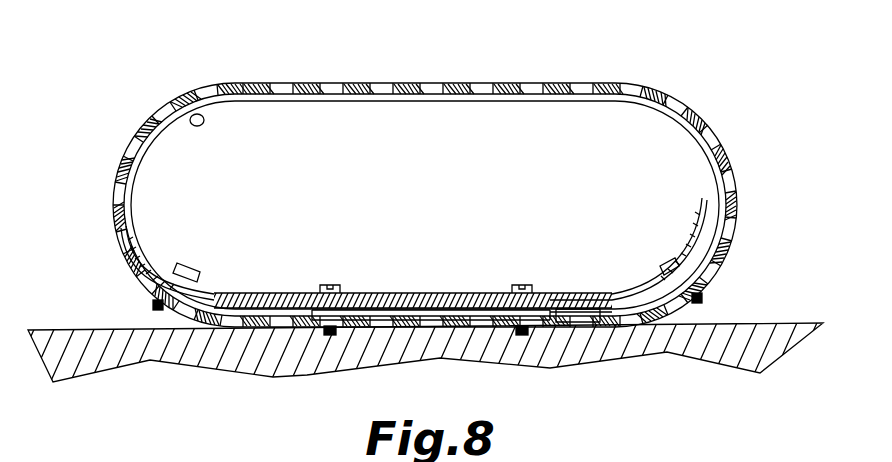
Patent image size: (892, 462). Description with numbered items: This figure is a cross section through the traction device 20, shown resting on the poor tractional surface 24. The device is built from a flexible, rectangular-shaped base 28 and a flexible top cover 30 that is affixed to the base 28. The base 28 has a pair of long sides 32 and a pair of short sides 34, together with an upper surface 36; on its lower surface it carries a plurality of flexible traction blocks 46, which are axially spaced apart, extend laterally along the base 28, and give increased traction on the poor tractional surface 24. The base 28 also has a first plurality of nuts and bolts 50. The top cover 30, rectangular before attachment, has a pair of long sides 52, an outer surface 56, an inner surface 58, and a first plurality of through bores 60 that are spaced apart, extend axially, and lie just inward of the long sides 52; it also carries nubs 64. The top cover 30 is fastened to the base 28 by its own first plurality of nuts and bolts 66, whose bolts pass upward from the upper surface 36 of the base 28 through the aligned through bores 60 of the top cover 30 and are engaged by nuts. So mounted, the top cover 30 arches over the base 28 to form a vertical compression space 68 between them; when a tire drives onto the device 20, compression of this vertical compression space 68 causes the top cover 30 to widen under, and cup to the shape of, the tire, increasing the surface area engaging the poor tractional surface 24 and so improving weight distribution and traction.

The traction device 20 is at (79, 105).
The poor tractional surface 24 is at (77, 326).
The base 28 is at (418, 290).
The top cover 30 is at (248, 81).
The long sides 32 is at (153, 240).
The short sides 34 is at (578, 328).
The upper surface 36 is at (581, 284).
The traction blocks 46 is at (352, 298).
The first plurality of nuts and bolts 50 is at (328, 338).
The long sides 52 is at (322, 292).
The outer surface 56 is at (345, 84).
The inner surface 58 is at (192, 113).
The first plurality of through bores 60 is at (662, 266).
The nubs 64 is at (713, 113).
The first plurality of nuts and bolts 66 is at (201, 270).
The vertical compression space 68 is at (578, 122).